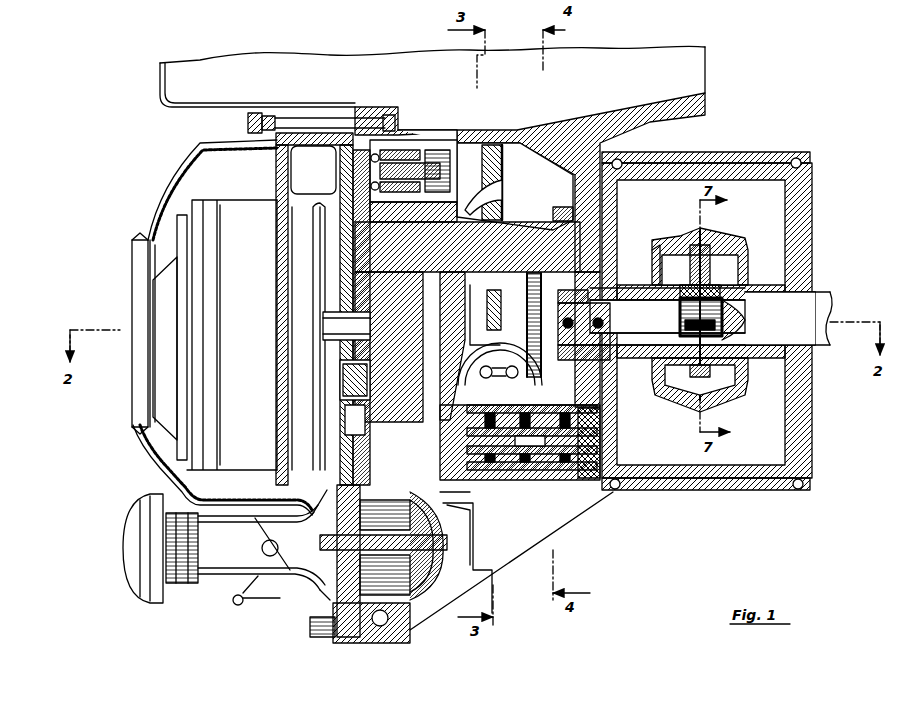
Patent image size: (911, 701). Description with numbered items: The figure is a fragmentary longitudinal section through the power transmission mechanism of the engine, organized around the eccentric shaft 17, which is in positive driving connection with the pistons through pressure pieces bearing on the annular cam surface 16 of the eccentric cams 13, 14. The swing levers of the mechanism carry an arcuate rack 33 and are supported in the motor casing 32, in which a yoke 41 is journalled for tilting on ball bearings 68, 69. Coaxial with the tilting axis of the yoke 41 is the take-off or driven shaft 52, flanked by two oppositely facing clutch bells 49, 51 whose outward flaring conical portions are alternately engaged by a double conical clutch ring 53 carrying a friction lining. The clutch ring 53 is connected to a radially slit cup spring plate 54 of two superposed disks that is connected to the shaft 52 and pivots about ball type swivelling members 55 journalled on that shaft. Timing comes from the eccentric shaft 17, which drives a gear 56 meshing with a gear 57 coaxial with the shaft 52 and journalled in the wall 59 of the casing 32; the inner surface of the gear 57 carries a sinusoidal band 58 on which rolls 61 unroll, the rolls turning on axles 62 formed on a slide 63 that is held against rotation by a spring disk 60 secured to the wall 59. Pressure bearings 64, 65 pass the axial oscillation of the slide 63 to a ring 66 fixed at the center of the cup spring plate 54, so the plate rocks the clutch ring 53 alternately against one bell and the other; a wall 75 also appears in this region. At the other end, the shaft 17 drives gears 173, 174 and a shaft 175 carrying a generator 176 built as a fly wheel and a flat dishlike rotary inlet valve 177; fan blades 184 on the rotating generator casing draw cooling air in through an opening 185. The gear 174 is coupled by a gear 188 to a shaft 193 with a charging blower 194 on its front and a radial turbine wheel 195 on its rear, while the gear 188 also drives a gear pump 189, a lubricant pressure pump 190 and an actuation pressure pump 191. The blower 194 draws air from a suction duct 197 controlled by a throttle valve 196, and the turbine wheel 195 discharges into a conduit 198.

The eccentric cam 13 is at (497, 182).
The eccentric cam 14 is at (460, 312).
The annular cam surface 16 is at (500, 202).
The eccentric shaft 17 is at (455, 228).
The motor casing 32 is at (412, 137).
The arcuate rack 33 is at (500, 373).
The yoke 41 is at (718, 168).
The first clutch bell 49 is at (664, 248).
The second clutch bell 51 is at (730, 238).
The driven shaft 52 is at (812, 298).
The double conical clutch ring 53 is at (742, 392).
The cup spring plate 54 is at (692, 284).
The swivelling members 55 is at (692, 372).
The gear 56 is at (562, 208).
The gear 57 is at (604, 274).
The sinusoidal band 58 is at (590, 306).
The wall 59 is at (597, 208).
The spring disk 60 is at (490, 316).
The rolls 61 is at (596, 347).
The axles 62 is at (612, 330).
The slide 63 is at (625, 325).
The pressure bearing 64 is at (688, 340).
The pressure bearing 65 is at (738, 305).
The ring 66 is at (745, 350).
The ball bearing 68 is at (618, 160).
The ball bearing 69 is at (802, 160).
The wall 75 is at (748, 268).
The gear 173 is at (368, 210).
The gear 174 is at (333, 372).
The shaft 175 is at (338, 328).
The generator 176 is at (245, 208).
The rotary inlet valve 177 is at (396, 128).
The fan blades 184 is at (175, 442).
The opening 185 is at (132, 273).
The gear 188 is at (333, 415).
The gear pump 189 is at (488, 452).
The pressure pump 190 is at (527, 452).
The pressure pump 191 is at (560, 478).
The shaft 193 is at (438, 535).
The charging blower 194 is at (335, 590).
The radial turbine wheel 195 is at (465, 553).
The throttle valve 196 is at (258, 528).
The suction duct 197 is at (228, 572).
The conduit 198 is at (480, 575).